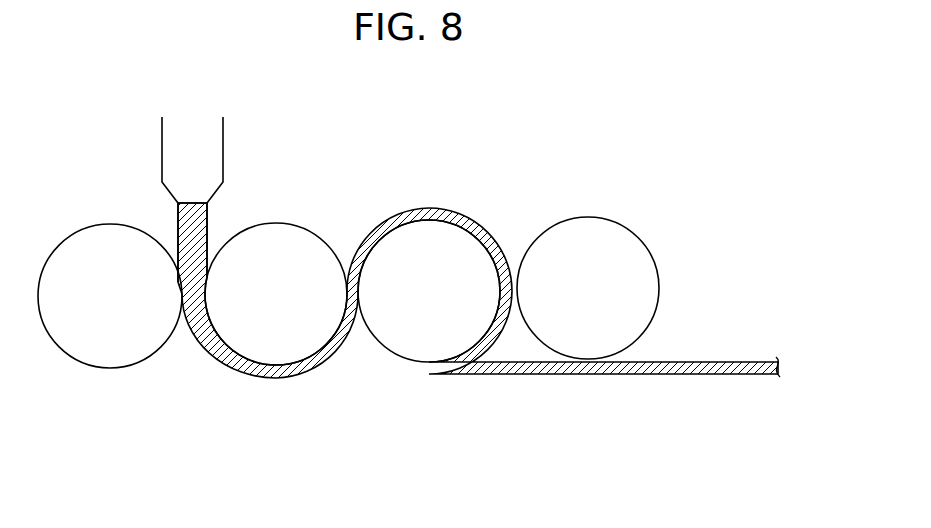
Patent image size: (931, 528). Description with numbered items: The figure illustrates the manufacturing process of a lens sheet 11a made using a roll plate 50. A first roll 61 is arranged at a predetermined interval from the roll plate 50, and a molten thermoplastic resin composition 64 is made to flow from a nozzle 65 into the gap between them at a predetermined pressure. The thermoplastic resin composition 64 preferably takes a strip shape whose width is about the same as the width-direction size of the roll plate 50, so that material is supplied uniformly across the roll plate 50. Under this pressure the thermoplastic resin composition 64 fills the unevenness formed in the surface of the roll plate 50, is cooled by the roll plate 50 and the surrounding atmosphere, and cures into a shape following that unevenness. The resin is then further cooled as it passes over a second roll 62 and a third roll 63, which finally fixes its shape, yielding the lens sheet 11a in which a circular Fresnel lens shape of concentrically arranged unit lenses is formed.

The lens sheet 11a is at (728, 361).
The roll plate 50 is at (284, 240).
The first roll 61 is at (95, 353).
The second roll 62 is at (425, 348).
The third roll 63 is at (592, 240).
The thermoplastic resin composition 64 is at (201, 230).
The nozzle 65 is at (206, 145).